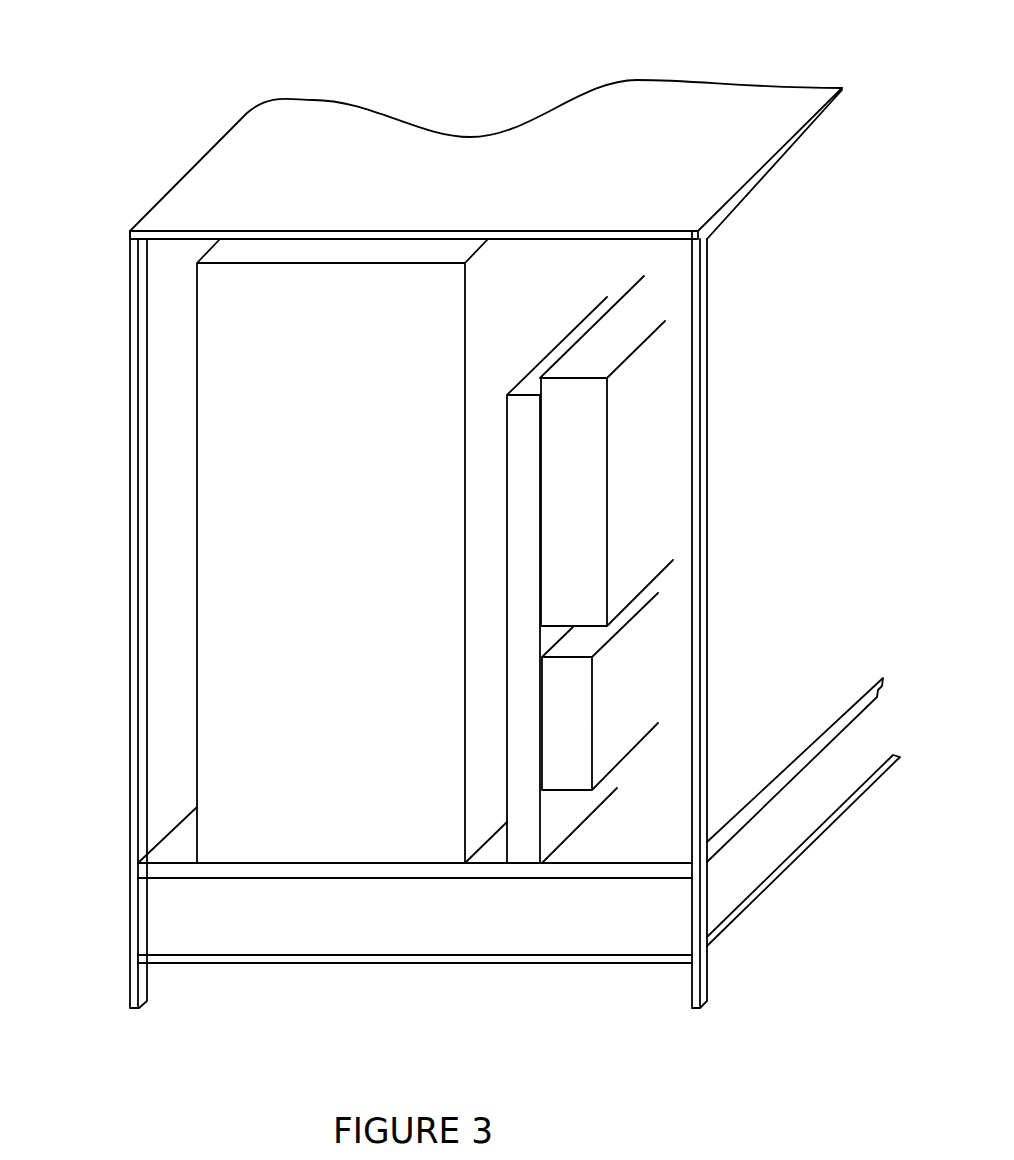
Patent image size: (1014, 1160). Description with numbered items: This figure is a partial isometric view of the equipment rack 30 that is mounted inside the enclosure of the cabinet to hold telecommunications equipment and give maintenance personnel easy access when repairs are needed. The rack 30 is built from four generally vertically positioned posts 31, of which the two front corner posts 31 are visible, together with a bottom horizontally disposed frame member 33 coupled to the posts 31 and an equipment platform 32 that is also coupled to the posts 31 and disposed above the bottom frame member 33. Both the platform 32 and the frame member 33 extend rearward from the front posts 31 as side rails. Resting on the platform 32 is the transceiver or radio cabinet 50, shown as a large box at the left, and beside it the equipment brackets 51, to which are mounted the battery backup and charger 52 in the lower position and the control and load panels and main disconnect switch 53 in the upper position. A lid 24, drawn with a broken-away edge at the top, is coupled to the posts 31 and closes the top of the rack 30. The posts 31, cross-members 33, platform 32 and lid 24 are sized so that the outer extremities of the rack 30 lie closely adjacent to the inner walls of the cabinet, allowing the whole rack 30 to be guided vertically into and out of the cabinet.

The lid 24 is at (619, 135).
The rack 30 is at (126, 643).
The posts 31 is at (130, 454).
The equipment platform 32 is at (743, 832).
The bottom frame member 33 is at (780, 878).
The radio cabinet 50 is at (342, 551).
The equipment brackets 51 is at (522, 420).
The battery backup and charger 52 is at (560, 745).
The control and load panels and main disconnect switch 53 is at (578, 480).